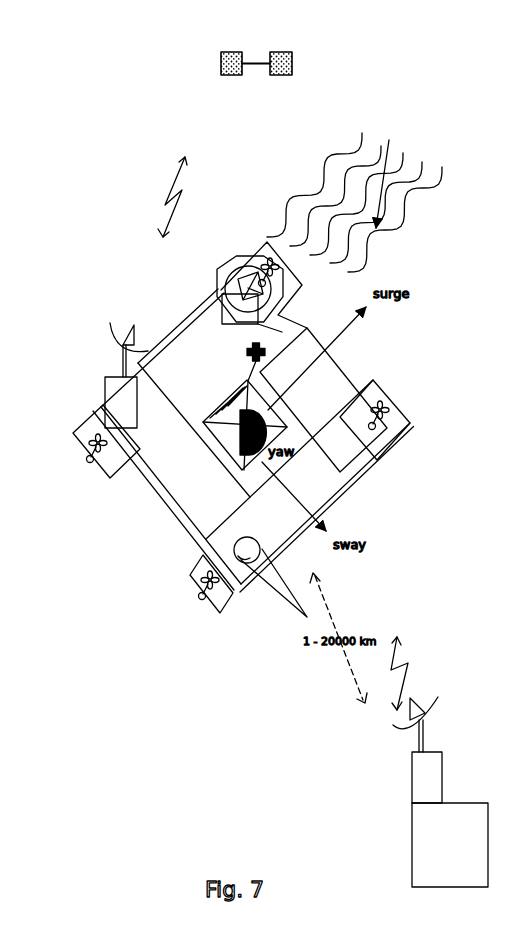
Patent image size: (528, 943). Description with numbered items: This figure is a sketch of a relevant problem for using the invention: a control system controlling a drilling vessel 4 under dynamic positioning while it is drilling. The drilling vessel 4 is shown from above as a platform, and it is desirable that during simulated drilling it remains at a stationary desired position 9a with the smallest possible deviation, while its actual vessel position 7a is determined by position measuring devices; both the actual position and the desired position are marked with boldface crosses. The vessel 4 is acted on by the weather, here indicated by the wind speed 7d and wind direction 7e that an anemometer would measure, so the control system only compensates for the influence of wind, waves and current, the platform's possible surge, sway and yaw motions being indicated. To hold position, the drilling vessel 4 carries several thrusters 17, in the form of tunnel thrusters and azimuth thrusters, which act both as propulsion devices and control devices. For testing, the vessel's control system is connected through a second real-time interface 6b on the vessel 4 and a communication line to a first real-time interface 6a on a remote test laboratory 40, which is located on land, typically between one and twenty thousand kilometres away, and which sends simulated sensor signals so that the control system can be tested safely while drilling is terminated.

The drilling vessel 4 is at (165, 320).
The first real-time interface 6a is at (417, 750).
The second real-time interface 6b is at (126, 375).
The vessel position 7a is at (240, 466).
The wind speed 7d is at (325, 170).
The wind direction 7e is at (383, 192).
The desired position 9a is at (247, 383).
The thrusters 17 is at (93, 460).
The remote test laboratory 40 is at (450, 845).